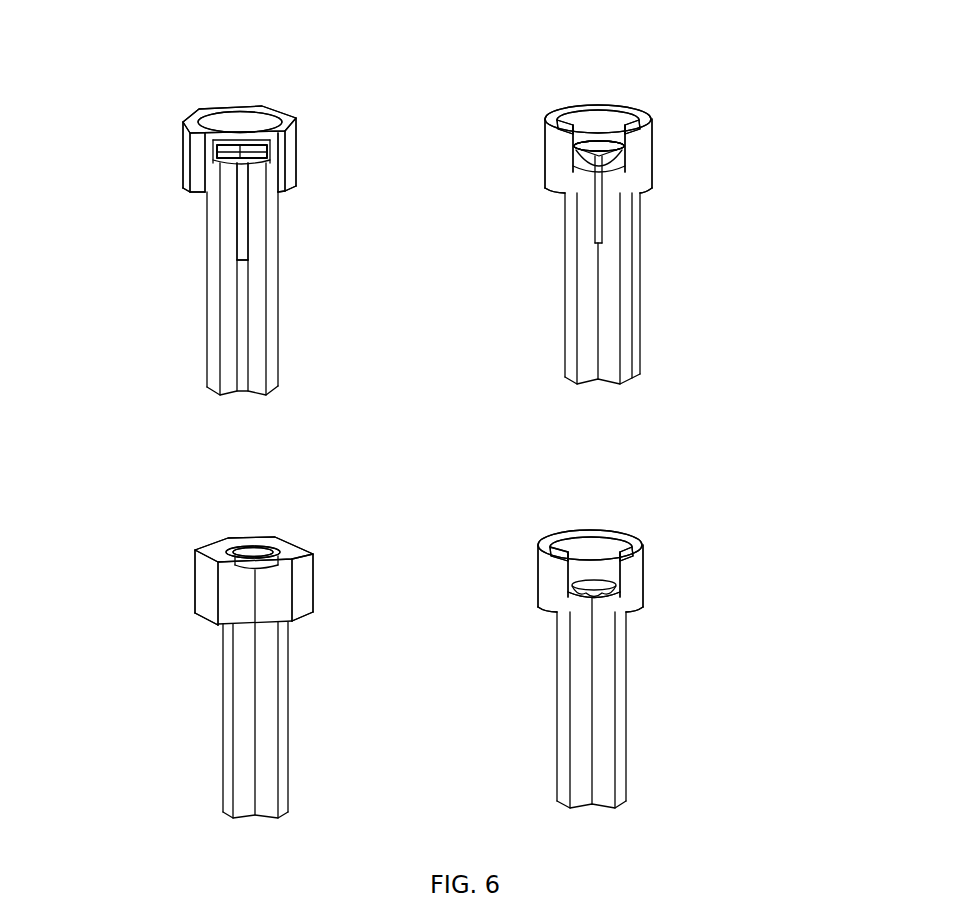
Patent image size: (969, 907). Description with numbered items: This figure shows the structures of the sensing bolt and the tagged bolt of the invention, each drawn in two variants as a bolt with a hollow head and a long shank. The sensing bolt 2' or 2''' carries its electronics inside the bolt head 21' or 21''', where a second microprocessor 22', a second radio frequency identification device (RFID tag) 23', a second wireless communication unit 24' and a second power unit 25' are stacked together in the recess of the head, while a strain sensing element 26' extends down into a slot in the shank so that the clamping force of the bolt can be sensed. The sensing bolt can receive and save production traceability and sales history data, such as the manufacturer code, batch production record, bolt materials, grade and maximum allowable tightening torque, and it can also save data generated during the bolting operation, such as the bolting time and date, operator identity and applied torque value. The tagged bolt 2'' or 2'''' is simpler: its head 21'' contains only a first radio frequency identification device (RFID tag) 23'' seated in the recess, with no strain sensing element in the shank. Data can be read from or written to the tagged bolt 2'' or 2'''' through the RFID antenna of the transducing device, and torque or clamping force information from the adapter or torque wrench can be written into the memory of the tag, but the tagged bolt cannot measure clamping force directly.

The sensing bolt 2' is at (176, 250).
The head of connector 21' is at (288, 109).
The second microprocessor 22' is at (551, 140).
The second radio frequency identification device (RFID tag) 23' is at (457, 143).
The second wireless communication unit 24' is at (457, 143).
The second power unit 25' is at (457, 143).
The strain sensing element 26' is at (338, 235).
The sensing bolt 2''' is at (526, 244).
The head of connector 21''' is at (650, 110).
The tagged bolt 2'' is at (186, 677).
The head of connector 21'' is at (475, 542).
The first radio frequency identification device (RFID tag) 23'' is at (410, 528).
The tagged bolt 2'''' is at (516, 669).